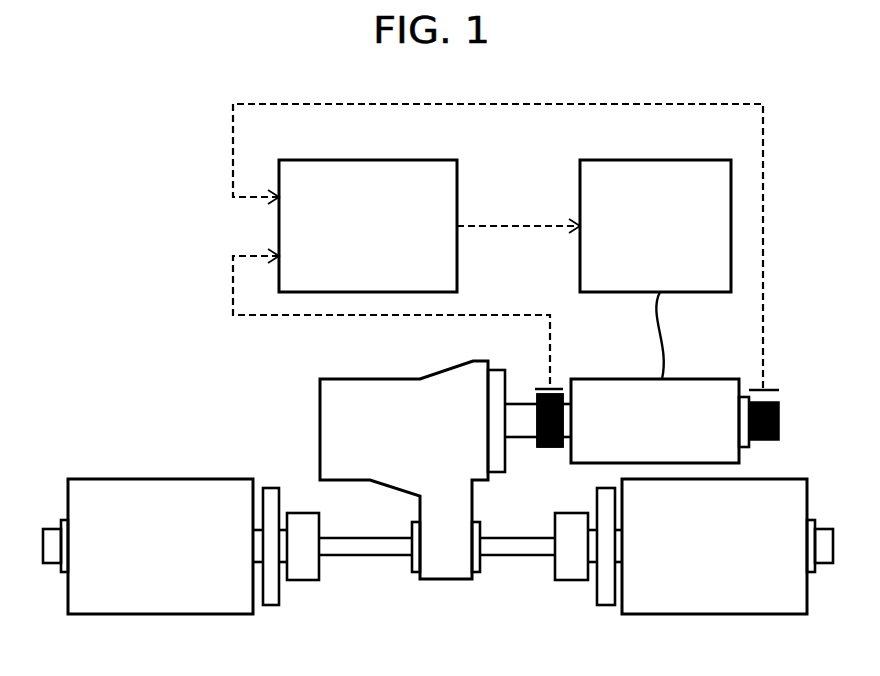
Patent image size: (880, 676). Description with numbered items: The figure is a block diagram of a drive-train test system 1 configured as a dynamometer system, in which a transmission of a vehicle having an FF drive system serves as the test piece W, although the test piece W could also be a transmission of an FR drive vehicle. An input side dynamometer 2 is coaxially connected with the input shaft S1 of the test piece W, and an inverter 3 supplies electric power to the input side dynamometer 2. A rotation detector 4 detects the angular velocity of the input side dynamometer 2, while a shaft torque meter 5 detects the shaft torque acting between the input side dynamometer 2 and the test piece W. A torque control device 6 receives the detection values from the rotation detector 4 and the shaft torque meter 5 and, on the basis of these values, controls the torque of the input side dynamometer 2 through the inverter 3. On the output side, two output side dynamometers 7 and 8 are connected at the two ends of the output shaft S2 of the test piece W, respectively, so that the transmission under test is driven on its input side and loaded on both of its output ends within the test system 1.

The drive-train test system 1 is at (95, 226).
The input side dynamometer 2 is at (697, 379).
The inverter 3 is at (682, 160).
The rotation detector 4 is at (771, 390).
The shaft torque meter 5 is at (559, 392).
The torque control device 6 is at (406, 160).
The output side dynamometer 7 is at (197, 614).
The output side dynamometer 8 is at (753, 614).
The test piece W is at (352, 379).
The input shaft S1 is at (512, 404).
The output shaft S2 is at (362, 555).